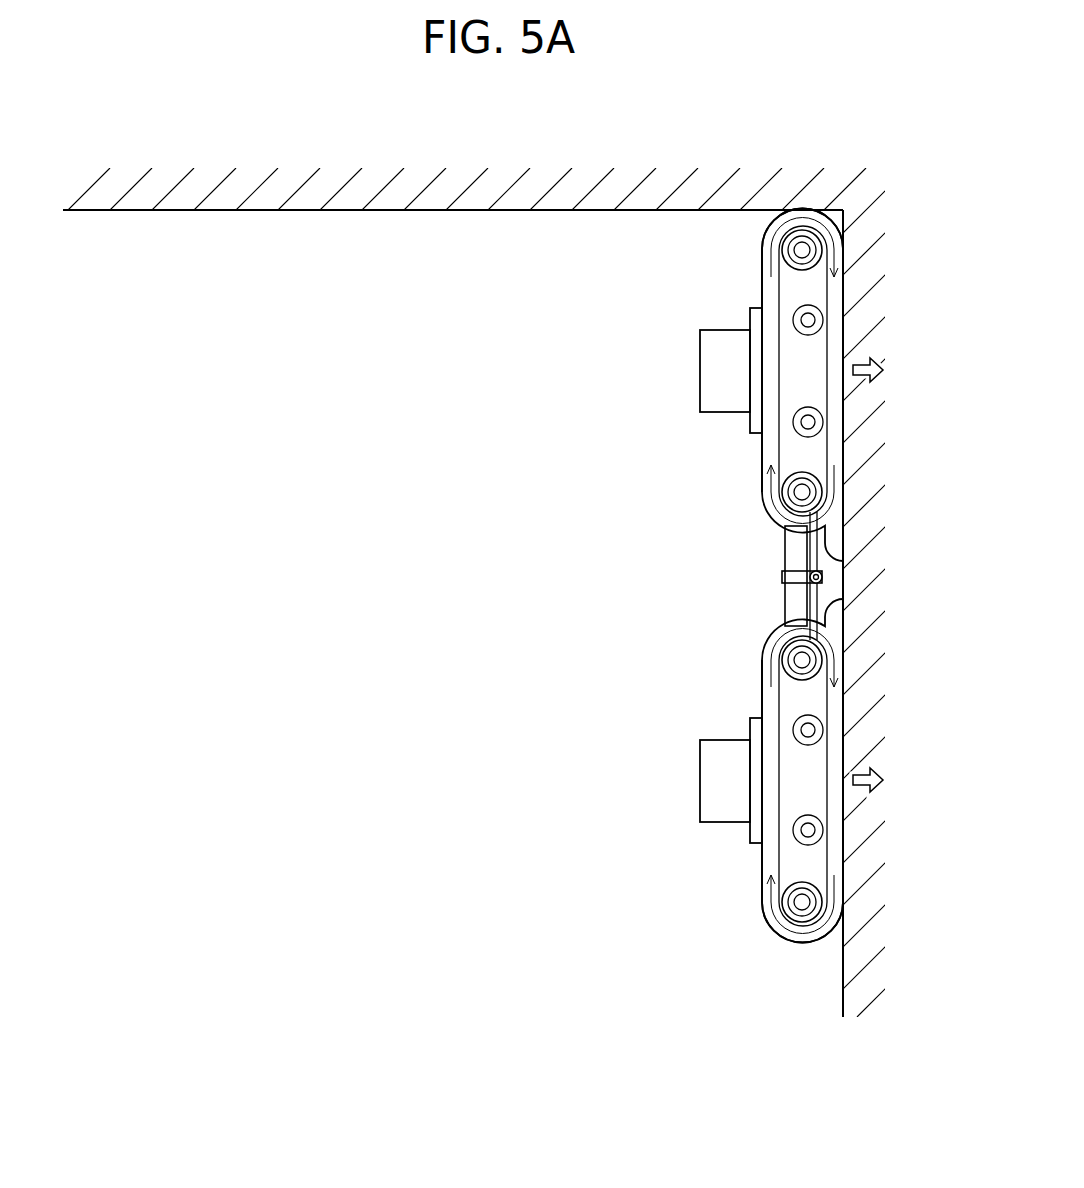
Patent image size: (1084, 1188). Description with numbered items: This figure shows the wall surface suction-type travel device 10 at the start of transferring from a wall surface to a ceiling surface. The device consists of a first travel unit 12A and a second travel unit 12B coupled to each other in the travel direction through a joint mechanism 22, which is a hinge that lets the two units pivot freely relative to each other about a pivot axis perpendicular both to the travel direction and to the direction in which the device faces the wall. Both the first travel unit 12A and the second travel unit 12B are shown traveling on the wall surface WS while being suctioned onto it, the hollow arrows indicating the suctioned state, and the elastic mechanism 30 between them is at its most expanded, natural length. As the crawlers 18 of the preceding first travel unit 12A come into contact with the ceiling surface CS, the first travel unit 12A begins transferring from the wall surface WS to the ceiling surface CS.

The wall surface suction-type travel device 10 is at (576, 531).
The first travel unit 12A is at (661, 381).
The second travel unit 12B is at (661, 777).
The crawlers 18 is at (762, 272).
The joint mechanism 22 is at (822, 577).
The elastic mechanism 30 is at (786, 556).
The ceiling surface CS is at (97, 211).
The wall surface WS is at (843, 1000).